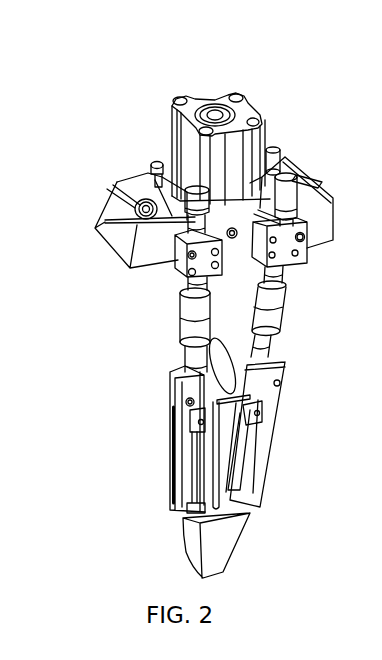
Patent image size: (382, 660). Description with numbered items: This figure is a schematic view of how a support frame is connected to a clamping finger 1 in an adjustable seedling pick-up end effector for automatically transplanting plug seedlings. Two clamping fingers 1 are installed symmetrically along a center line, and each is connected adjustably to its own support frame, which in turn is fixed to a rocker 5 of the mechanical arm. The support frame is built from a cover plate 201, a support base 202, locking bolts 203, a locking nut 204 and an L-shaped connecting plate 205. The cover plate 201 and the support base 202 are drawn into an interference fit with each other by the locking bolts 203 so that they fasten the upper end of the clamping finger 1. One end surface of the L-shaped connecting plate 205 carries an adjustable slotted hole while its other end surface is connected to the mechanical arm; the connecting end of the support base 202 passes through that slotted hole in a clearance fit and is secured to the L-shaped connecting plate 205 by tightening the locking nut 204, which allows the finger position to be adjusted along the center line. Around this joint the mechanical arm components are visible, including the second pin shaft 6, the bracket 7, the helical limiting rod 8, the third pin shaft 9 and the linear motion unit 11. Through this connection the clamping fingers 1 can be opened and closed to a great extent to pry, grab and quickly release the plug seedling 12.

The clamping finger 1 is at (184, 341).
The rocker 5 is at (145, 208).
The second pin shaft 6 is at (135, 210).
The bracket 7 is at (168, 204).
The helical limiting rod 8 is at (157, 167).
The third pin shaft 9 is at (232, 233).
The linear motion unit 11 is at (252, 152).
The plug seedling 12 is at (223, 528).
The cover plate 201 is at (198, 328).
The support base 202 is at (203, 264).
The locking bolt 203 is at (176, 252).
The locking nut 204 is at (170, 243).
The L-shaped connecting plate 205 is at (140, 240).